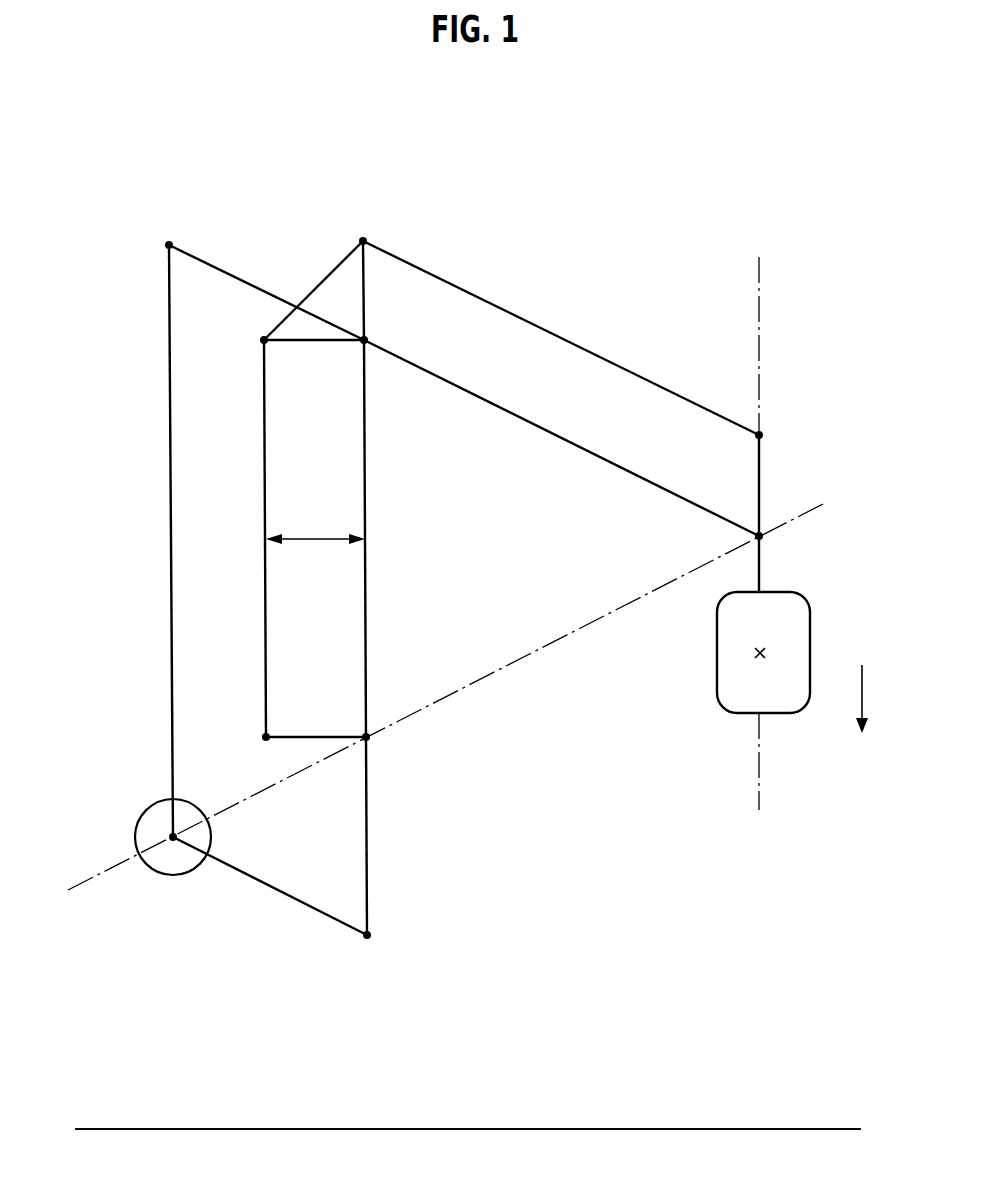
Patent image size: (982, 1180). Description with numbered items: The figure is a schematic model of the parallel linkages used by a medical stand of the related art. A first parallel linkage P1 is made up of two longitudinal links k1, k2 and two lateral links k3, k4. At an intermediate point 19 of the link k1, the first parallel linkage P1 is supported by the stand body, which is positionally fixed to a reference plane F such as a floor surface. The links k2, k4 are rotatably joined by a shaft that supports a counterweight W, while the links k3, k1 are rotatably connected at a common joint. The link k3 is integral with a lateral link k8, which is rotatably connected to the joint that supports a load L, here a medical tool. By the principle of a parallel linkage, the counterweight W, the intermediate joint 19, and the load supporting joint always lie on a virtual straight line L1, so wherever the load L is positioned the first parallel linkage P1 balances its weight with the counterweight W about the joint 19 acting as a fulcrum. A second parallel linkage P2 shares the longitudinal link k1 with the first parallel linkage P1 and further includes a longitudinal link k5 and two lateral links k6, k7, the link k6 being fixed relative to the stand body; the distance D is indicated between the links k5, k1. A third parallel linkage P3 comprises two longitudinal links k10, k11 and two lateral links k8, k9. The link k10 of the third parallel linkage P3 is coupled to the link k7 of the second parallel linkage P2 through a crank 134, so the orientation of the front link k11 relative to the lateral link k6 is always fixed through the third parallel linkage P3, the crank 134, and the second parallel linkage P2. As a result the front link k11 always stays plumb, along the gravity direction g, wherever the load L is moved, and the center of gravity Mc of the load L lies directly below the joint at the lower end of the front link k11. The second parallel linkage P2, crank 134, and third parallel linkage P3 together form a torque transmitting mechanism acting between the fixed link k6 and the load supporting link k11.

The longitudinal link k1 is at (367, 518).
The longitudinal link k2 is at (170, 468).
The lateral link k3 is at (233, 277).
The lateral link k4 is at (263, 882).
The longitudinal link k5 is at (265, 496).
The lateral link k6 is at (330, 737).
The lateral link k7 is at (322, 342).
The lateral link k8 is at (580, 448).
The lateral link k9 is at (605, 360).
The longitudinal link k10 is at (367, 282).
The front link k11 is at (762, 470).
The crank 134 is at (330, 274).
The intermediate point 19 is at (367, 739).
The first parallel linkage P1 is at (166, 595).
The second parallel linkage P2 is at (262, 662).
The third parallel linkage P3 is at (654, 370).
The distance D is at (315, 525).
The counterweight W is at (146, 822).
The virtual straight line L1 is at (431, 710).
The load L is at (717, 666).
The center of gravity Mc is at (772, 652).
The gravity direction g is at (870, 699).
The reference plane F is at (755, 1127).